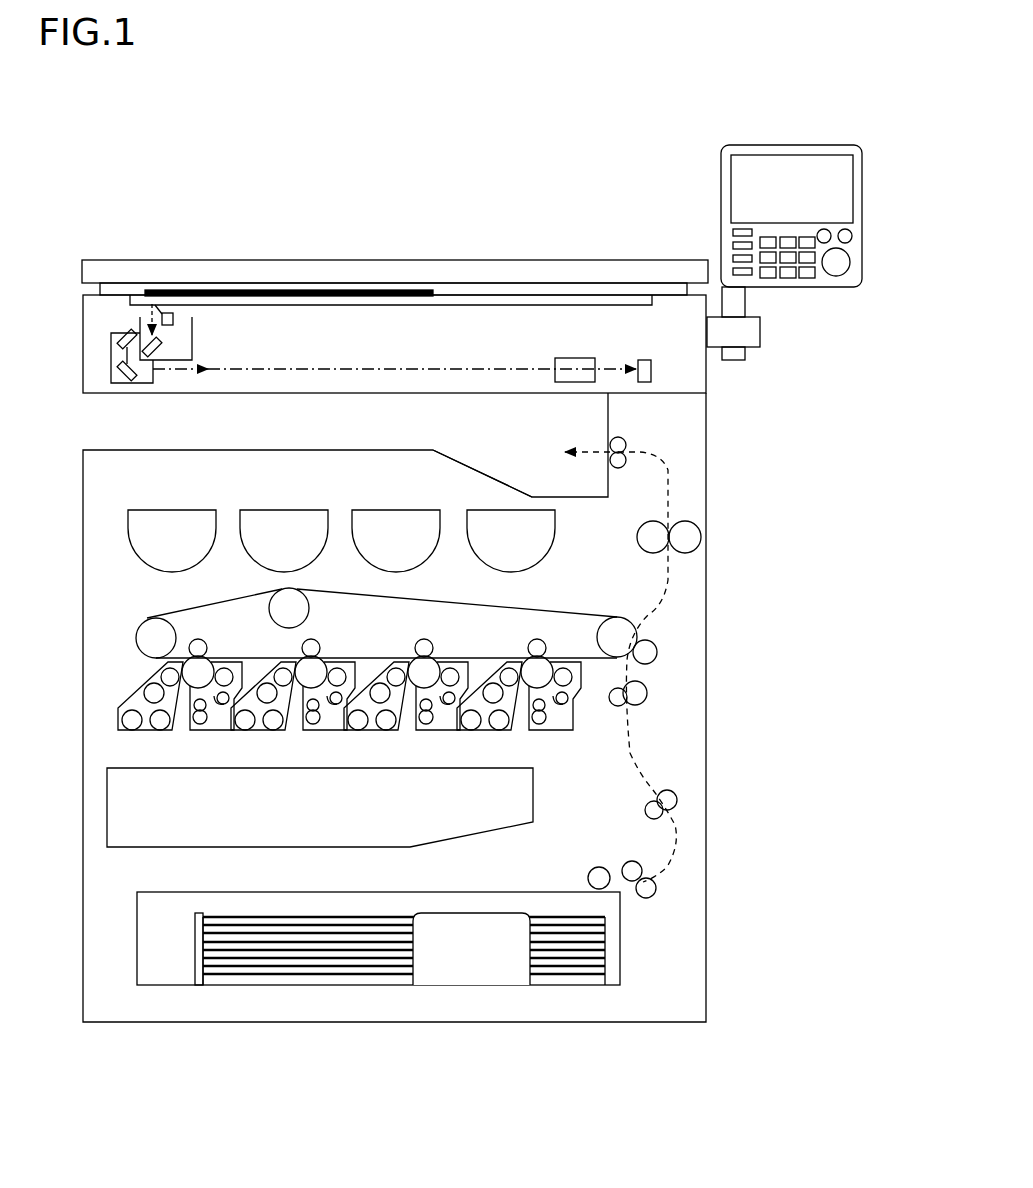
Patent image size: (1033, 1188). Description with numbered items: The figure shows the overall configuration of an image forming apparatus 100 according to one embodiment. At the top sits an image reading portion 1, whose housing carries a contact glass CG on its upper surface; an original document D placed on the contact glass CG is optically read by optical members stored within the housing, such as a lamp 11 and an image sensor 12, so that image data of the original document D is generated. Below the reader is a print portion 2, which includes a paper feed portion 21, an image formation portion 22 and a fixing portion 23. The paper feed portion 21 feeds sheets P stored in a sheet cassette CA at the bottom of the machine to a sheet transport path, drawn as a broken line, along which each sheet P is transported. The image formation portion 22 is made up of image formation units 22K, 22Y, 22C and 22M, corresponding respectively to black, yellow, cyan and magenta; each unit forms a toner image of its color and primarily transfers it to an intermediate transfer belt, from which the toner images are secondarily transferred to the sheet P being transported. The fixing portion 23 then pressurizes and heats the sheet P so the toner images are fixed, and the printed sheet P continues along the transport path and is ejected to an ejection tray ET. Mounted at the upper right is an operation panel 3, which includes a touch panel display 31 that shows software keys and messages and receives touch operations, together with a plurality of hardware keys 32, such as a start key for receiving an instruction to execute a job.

The image forming apparatus 100 is at (157, 240).
The image reading portion 1 is at (417, 303).
The print portion 2 is at (417, 707).
The operation panel 3 is at (759, 226).
The touch panel display 31 is at (781, 168).
The hardware key 32 is at (836, 278).
The lamp 11 is at (174, 319).
The image sensor 12 is at (644, 358).
The original document D is at (397, 290).
The contact glass CG is at (482, 300).
The ejection tray ET is at (482, 470).
The fixing portion 23 is at (622, 538).
The image formation portion 22 is at (366, 725).
The image formation unit 22M is at (160, 742).
The image formation unit 22C is at (255, 742).
The image formation unit 22Y is at (370, 742).
The image formation unit 22K is at (487, 742).
The paper feed portion 21 is at (597, 857).
The sheet P is at (355, 913).
The sheet cassette CA is at (408, 917).